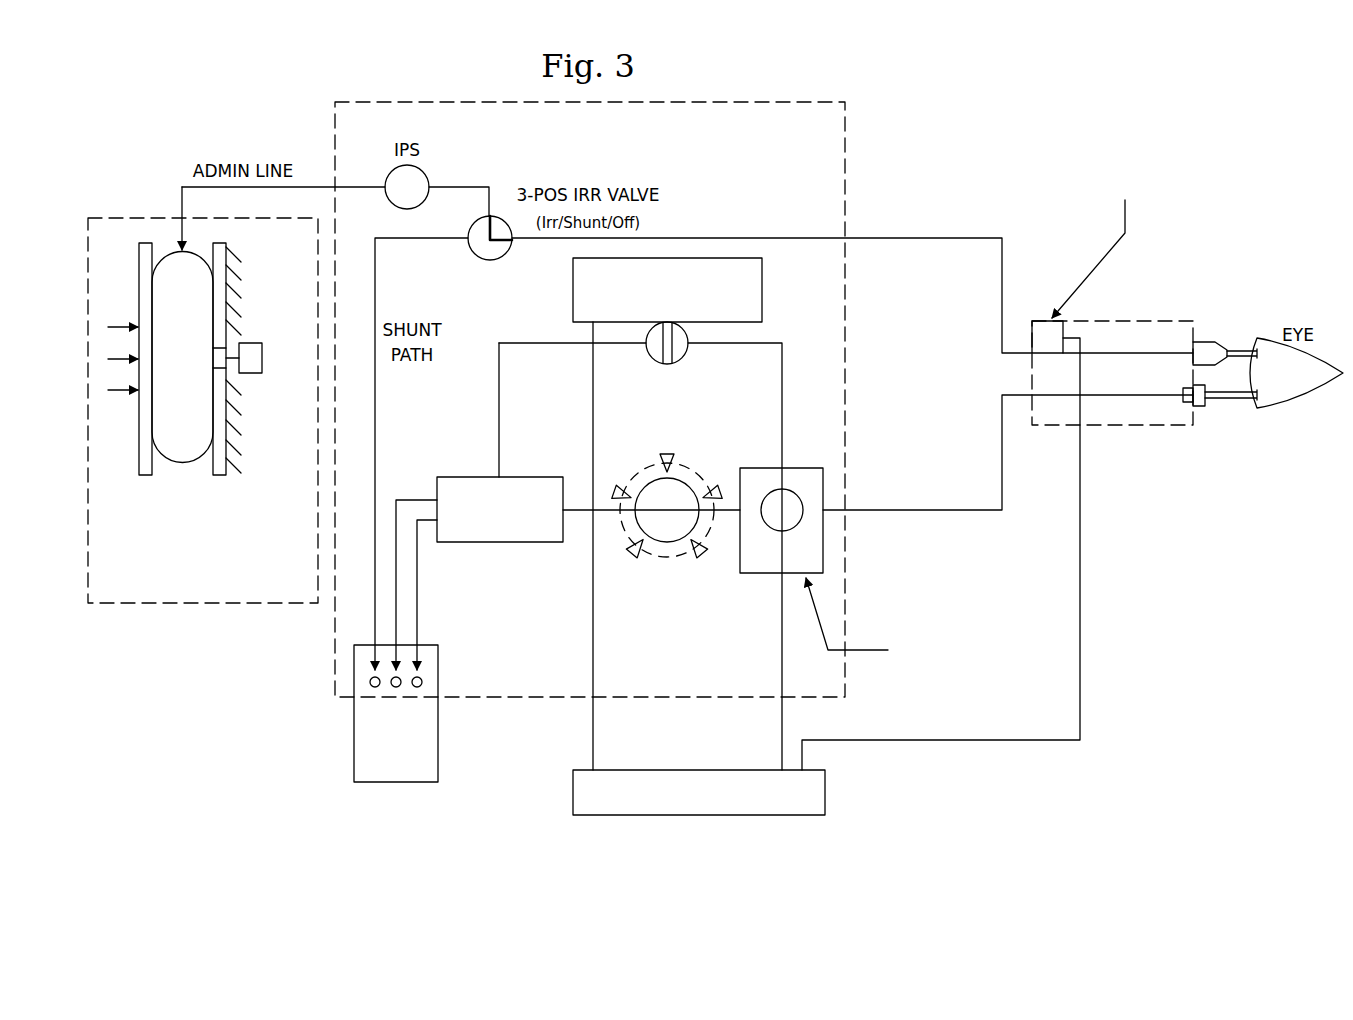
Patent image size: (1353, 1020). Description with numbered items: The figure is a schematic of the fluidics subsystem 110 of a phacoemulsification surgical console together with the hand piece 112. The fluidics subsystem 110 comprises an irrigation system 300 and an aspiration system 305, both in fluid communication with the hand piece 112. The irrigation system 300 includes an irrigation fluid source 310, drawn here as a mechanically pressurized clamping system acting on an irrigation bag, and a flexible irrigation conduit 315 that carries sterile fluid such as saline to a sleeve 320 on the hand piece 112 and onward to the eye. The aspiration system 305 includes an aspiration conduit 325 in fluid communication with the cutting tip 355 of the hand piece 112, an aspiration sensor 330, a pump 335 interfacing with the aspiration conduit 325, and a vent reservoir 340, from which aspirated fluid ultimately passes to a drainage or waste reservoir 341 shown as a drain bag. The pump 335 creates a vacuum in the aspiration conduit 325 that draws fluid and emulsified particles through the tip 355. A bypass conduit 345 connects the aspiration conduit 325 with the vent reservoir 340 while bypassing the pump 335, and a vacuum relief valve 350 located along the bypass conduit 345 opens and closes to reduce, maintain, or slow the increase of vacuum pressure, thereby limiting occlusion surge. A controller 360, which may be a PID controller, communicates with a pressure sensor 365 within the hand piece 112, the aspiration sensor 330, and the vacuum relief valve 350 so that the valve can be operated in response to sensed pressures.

The fluidics subsystem 110 is at (211, 779).
The hand piece 112 is at (1138, 427).
The irrigation system 300 is at (940, 176).
The aspiration system 305 is at (943, 391).
The irrigation fluid source 310 is at (183, 463).
The irrigation conduit 315 is at (922, 240).
The sleeve 320 is at (1228, 350).
The aspiration conduit 325 is at (923, 512).
The aspiration sensor 330 is at (802, 467).
The pump 335 is at (667, 453).
The vent reservoir 340 is at (483, 543).
The waste reservoir 341 is at (390, 783).
The bypass conduit 345 is at (782, 395).
The vacuum relief valve 350 is at (763, 290).
The cutting tip 355 is at (1230, 398).
The controller 360 is at (698, 815).
The pressure sensor 365 is at (1040, 328).